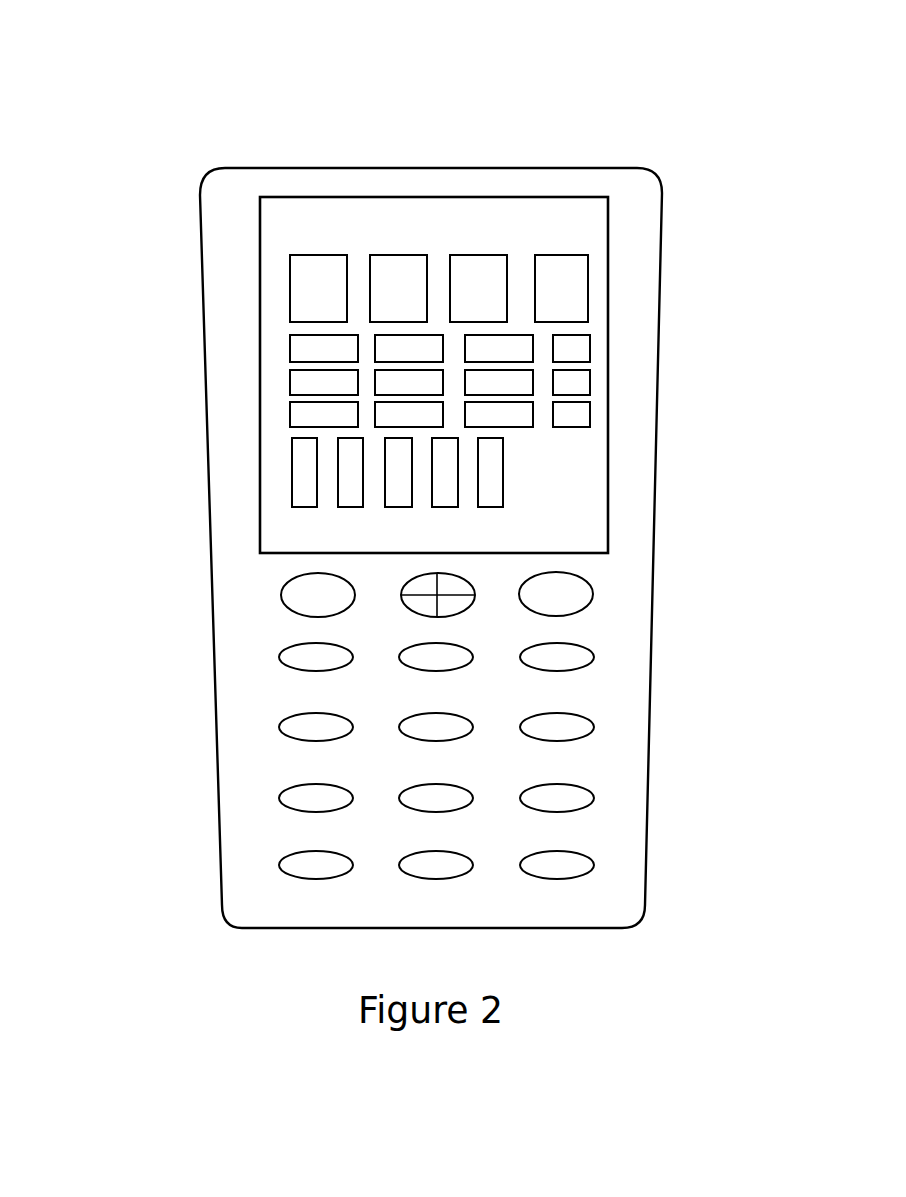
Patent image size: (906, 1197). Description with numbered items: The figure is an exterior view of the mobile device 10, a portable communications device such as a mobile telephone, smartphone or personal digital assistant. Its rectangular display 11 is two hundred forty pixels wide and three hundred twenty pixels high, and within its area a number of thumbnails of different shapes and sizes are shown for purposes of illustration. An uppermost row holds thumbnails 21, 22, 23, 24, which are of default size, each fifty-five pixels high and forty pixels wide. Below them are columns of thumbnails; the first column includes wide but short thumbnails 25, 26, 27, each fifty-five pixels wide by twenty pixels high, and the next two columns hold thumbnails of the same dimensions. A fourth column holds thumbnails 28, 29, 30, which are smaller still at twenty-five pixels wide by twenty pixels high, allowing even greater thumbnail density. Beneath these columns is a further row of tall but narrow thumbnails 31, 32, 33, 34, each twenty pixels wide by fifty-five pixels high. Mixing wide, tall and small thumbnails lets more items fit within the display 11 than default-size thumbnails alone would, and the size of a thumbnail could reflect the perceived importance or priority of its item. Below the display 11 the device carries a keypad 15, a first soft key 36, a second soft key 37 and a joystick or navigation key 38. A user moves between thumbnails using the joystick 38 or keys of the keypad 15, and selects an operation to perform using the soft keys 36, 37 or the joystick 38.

The mobile device 10 is at (548, 119).
The display 11 is at (260, 255).
The keypad 15 is at (324, 773).
The thumbnail 21 is at (318, 288).
The thumbnail 22 is at (398, 288).
The thumbnail 23 is at (478, 288).
The thumbnail 24 is at (561, 288).
The thumbnail 25 is at (290, 352).
The thumbnail 26 is at (293, 387).
The thumbnail 27 is at (293, 406).
The thumbnail 28 is at (590, 350).
The thumbnail 29 is at (590, 388).
The thumbnail 30 is at (590, 413).
The thumbnail 31 is at (292, 477).
The thumbnail 32 is at (336, 494).
The thumbnail 33 is at (503, 457).
The thumbnail 34 is at (462, 487).
The first soft key 36 is at (593, 593).
The second soft key 37 is at (281, 597).
The joystick 38 is at (407, 605).